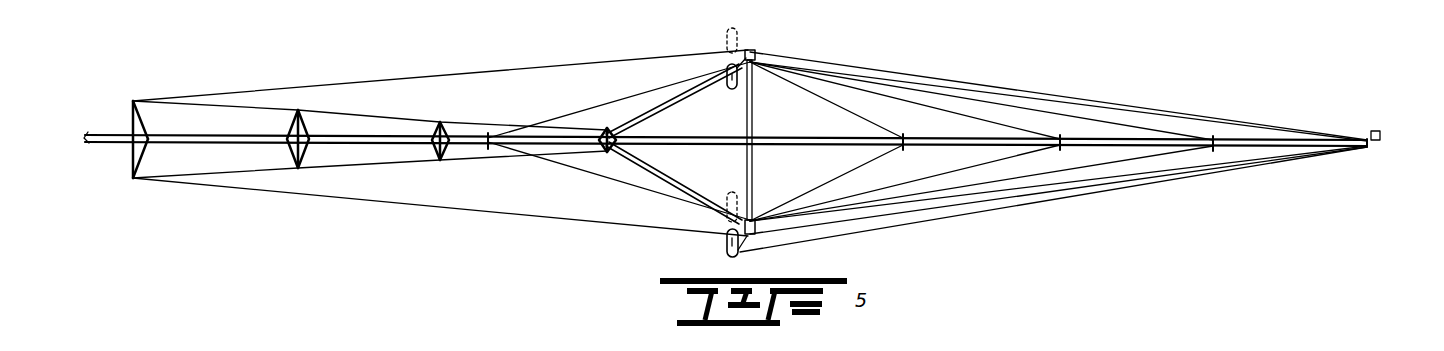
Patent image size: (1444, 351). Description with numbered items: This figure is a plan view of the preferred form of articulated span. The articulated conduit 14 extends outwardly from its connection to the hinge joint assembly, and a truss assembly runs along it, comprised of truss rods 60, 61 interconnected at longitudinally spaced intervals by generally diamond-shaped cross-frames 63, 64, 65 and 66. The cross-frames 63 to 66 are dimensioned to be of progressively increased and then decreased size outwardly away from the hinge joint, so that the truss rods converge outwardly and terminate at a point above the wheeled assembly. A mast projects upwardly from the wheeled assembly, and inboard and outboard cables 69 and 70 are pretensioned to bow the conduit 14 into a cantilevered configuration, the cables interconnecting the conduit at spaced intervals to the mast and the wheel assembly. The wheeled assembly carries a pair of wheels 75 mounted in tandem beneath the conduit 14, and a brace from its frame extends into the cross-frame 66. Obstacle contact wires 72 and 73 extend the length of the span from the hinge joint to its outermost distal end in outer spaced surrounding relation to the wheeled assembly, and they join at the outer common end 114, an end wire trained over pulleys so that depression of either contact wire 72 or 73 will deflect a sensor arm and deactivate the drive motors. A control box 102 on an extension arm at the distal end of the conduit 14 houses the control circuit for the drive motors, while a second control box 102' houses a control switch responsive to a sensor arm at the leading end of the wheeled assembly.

The articulated conduit 14 is at (353, 135).
The truss rod 60 is at (352, 165).
The truss rod 61 is at (405, 118).
The cross-frame 63 is at (138, 172).
The cross-frame 64 is at (292, 165).
The cross-frame 65 is at (445, 160).
The cross-frame 66 is at (619, 141).
The inboard cables 69 is at (608, 103).
The outboard cables 70 is at (955, 200).
The obstacle contact wire 72 is at (1046, 92).
The obstacle contact wire 73 is at (1049, 195).
The wheels 75 is at (727, 72).
The control box 102 is at (1401, 123).
The control box 102' is at (701, 124).
The outer common end of the contact wires 114 is at (757, 150).